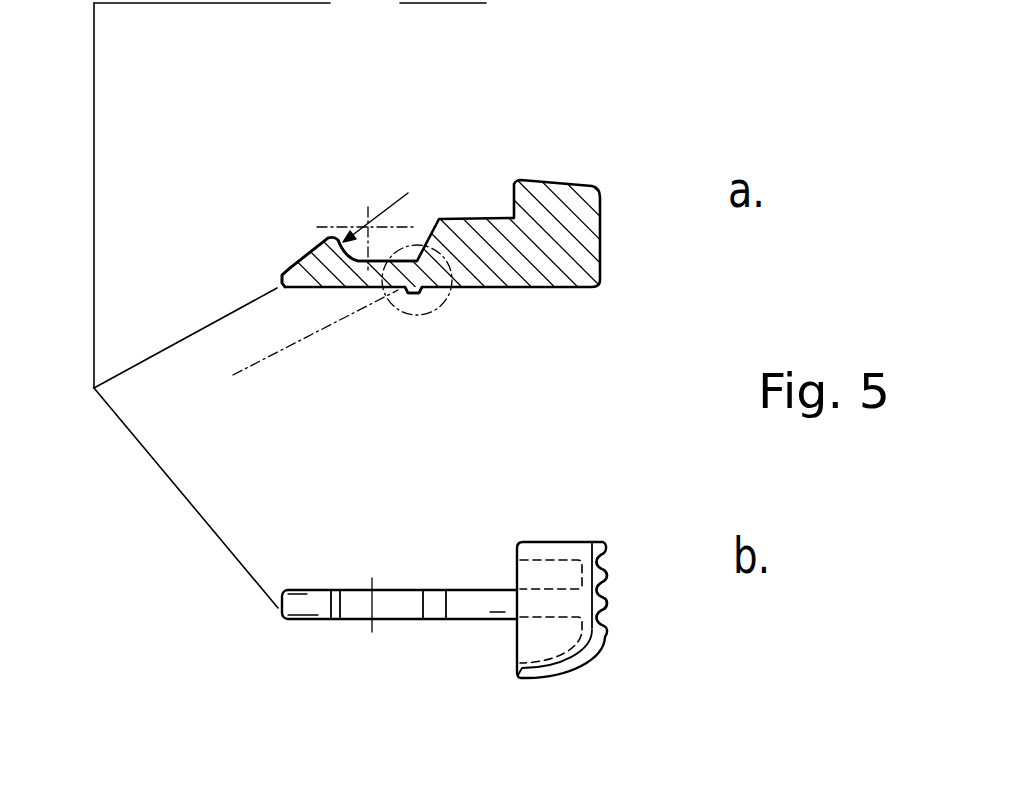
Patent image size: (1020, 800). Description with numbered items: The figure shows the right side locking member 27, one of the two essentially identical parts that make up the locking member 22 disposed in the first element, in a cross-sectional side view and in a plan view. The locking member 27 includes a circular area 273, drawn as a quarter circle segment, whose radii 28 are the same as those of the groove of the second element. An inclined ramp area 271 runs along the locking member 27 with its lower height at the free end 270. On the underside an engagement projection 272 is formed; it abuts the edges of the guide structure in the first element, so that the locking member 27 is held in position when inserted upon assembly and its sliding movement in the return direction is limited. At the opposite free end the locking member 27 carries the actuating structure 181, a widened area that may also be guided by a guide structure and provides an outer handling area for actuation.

In FIG. 5a, the locking member 22 is at (290, 13).
In FIG. 5a, the locking member 27 is at (568, 288).
In FIG. 5b, the locking member 27 is at (565, 540).
In FIG. 5a, the radii 28 is at (395, 205).
In FIG. 5b, the actuating structure 181 is at (578, 604).
In FIG. 5a, the free end 270 is at (280, 271).
In FIG. 5a, the inclined ramp area 271 is at (298, 258).
In FIG. 5a, the engagement projection 272 is at (423, 290).
In FIG. 5a, the circular area 273 is at (367, 190).